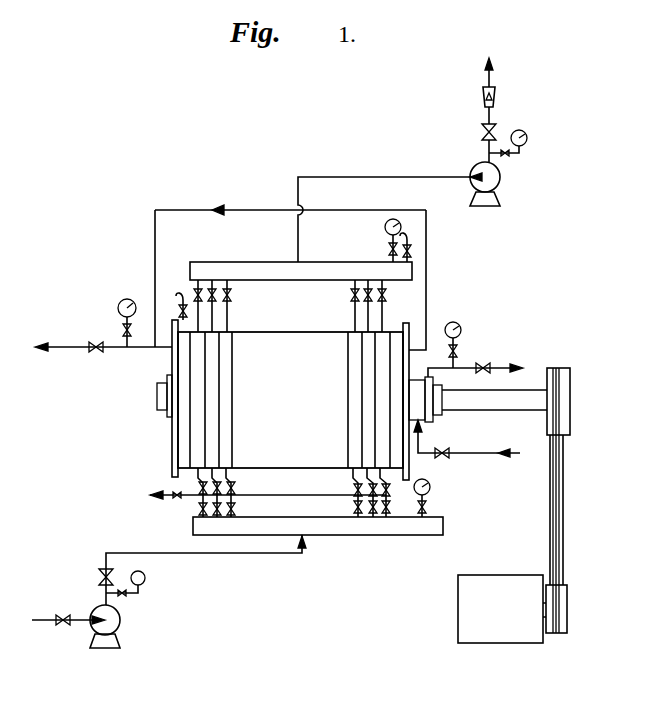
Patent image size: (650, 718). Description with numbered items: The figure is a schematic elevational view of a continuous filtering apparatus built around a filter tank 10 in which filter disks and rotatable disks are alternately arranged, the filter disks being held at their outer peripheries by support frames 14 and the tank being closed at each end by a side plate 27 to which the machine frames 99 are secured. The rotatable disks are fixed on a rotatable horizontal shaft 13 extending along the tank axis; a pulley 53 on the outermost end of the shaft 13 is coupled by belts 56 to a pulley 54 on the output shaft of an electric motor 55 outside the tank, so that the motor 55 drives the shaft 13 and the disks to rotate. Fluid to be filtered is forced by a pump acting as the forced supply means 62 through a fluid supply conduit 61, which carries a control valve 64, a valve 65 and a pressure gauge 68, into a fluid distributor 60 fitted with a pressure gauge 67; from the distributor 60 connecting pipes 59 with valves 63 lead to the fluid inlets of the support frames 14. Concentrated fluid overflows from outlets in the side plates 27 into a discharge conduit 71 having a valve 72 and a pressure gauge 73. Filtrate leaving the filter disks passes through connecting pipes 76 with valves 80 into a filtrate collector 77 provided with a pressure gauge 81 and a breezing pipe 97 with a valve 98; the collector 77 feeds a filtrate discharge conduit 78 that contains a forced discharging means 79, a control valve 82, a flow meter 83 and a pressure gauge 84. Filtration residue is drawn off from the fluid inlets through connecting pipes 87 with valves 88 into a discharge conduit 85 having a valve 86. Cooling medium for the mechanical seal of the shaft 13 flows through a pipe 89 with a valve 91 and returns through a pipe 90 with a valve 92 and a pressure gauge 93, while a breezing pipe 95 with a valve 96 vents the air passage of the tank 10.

The filter tank 10 is at (290, 332).
The rotatable horizontal shaft 13 is at (488, 410).
The support frames 14 is at (230, 438).
The side plate 27 is at (406, 345).
The pulley 53 is at (549, 369).
The pulley 54 is at (556, 636).
The electric motor 55 is at (508, 646).
The belts 56 is at (551, 478).
The connecting pipes 59 is at (233, 481).
The fluid distributor 60 is at (344, 535).
The fluid supply conduit 61 is at (190, 554).
The forced supply means 62 is at (122, 623).
The valves 63 is at (240, 496).
The control valve 64 is at (66, 630).
The valve 65 is at (100, 576).
The pressure gauge 67 is at (431, 487).
The pressure gauge 68 is at (145, 583).
The discharge conduit 71 is at (148, 352).
The valve 72 is at (98, 355).
The pressure gauge 73 is at (123, 300).
The connecting pipes 76 is at (230, 322).
The filtrate collector 77 is at (228, 262).
The filtrate discharge conduit 78 is at (388, 177).
The forced discharging means 79 is at (500, 180).
The valves 80 is at (196, 293).
The pressure gauge 81 is at (385, 231).
The control valve 82 is at (482, 130).
The flow meter 83 is at (483, 93).
The pressure gauge 84 is at (527, 136).
The discharge conduit 85 is at (197, 506).
The valve 86 is at (175, 500).
The connecting pipes 87 is at (352, 480).
The valves 88 is at (144, 498).
The pipe 89 is at (481, 460).
The pipe 90 is at (452, 368).
The valve 91 is at (446, 452).
The valve 92 is at (488, 367).
The pressure gauge 93 is at (460, 326).
The breezing pipe 95 is at (179, 296).
The valve 96 is at (183, 310).
The breezing pipe 97 is at (411, 250).
The valve 98 is at (410, 233).
The machine frames 99 is at (176, 368).